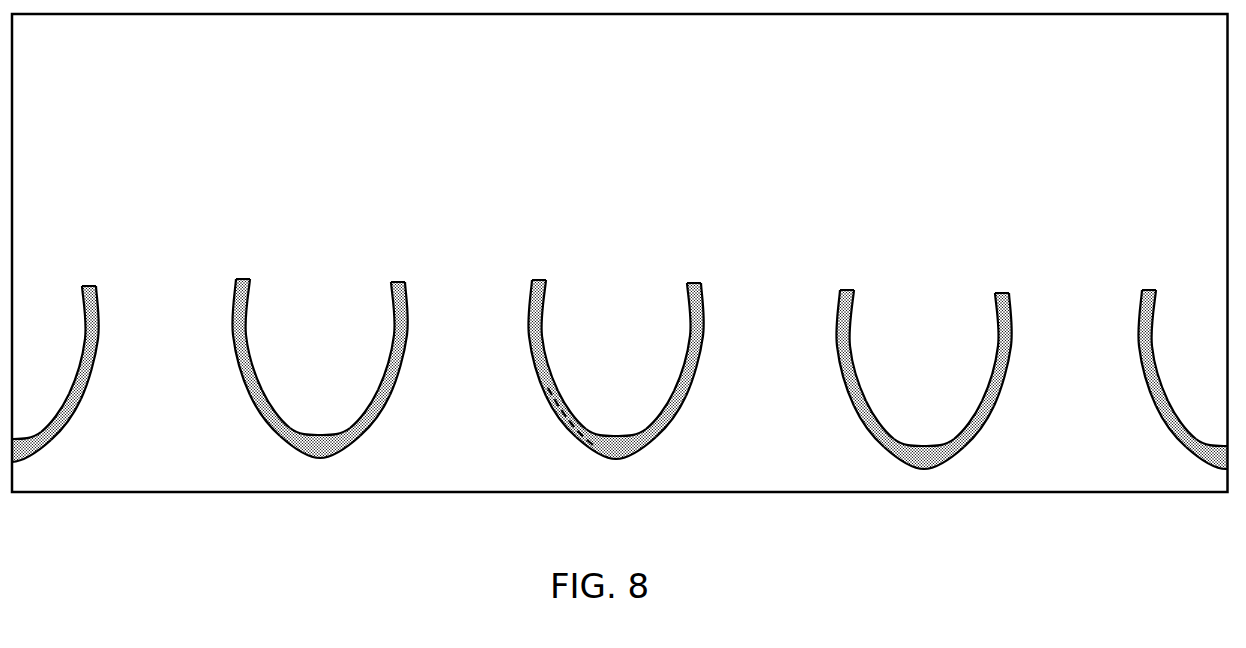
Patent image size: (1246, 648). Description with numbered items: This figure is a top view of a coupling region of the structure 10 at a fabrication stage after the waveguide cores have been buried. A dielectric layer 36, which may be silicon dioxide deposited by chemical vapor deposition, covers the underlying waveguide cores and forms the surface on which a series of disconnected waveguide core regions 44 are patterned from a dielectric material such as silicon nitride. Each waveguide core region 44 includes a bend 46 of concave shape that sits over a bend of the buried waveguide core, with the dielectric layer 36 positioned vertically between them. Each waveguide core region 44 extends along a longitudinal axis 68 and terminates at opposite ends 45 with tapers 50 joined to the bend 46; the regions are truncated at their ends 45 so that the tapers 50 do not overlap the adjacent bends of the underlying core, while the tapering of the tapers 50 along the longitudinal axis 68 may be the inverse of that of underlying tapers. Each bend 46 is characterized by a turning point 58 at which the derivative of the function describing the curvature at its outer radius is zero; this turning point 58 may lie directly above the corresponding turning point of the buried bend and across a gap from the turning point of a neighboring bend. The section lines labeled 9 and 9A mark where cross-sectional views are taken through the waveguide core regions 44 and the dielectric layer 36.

The structure 10 is at (118, 101).
The dielectric layer 36 is at (1135, 100).
The waveguide core region 44 is at (211, 362).
The opposite ends 45 is at (239, 279).
The bend 46 is at (380, 408).
The taper 50 is at (246, 323).
The turning point 58 is at (317, 458).
The longitudinal axis 68 is at (563, 432).
The section line 9- 9 is at (505, 237).
The section line 9A- 9A is at (828, 393).